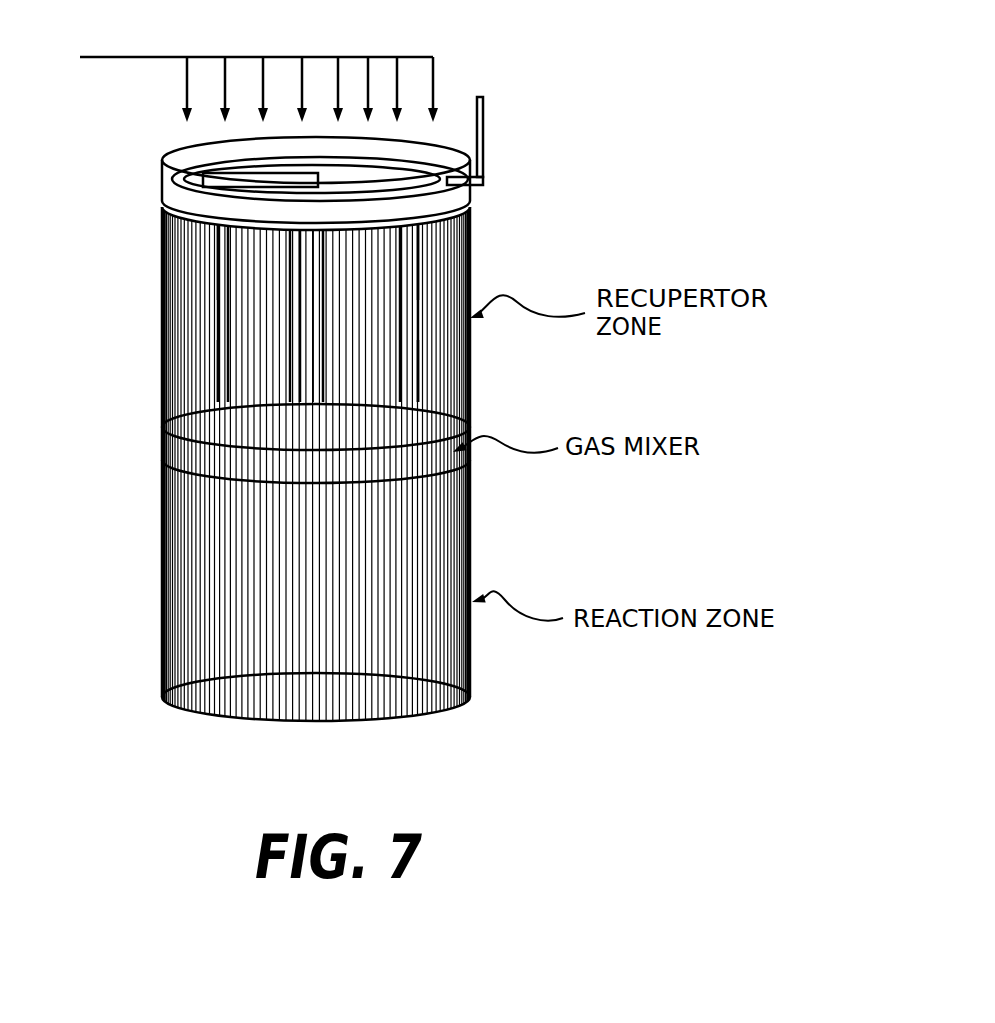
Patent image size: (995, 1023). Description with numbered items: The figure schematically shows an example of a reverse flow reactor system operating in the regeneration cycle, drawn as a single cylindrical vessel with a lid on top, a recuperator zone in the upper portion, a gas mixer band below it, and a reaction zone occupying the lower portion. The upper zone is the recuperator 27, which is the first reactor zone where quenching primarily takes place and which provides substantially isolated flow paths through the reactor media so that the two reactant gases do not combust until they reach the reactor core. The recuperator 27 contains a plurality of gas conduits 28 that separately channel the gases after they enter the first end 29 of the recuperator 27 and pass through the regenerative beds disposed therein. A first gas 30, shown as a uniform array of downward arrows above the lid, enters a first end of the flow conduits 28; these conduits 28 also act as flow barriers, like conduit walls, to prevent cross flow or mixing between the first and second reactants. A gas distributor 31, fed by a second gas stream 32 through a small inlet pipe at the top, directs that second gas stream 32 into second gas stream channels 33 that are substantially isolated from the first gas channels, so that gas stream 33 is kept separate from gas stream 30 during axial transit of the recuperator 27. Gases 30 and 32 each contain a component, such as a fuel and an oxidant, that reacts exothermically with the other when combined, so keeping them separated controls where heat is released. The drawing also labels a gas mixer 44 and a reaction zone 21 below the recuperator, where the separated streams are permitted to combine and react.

The reaction zone vessel body 21 is at (327, 614).
The recuperator 27 is at (370, 344).
The gas conduits 28 is at (436, 268).
The first end 29 is at (480, 207).
The first gas 30 is at (86, 57).
The gas distributor 31 is at (486, 162).
The second gas stream 32 is at (480, 80).
The second gas stream channels 33 is at (412, 393).
The gas mixer 44 is at (332, 444).